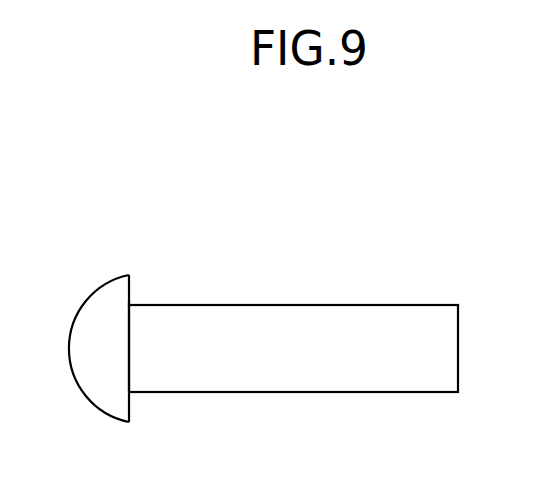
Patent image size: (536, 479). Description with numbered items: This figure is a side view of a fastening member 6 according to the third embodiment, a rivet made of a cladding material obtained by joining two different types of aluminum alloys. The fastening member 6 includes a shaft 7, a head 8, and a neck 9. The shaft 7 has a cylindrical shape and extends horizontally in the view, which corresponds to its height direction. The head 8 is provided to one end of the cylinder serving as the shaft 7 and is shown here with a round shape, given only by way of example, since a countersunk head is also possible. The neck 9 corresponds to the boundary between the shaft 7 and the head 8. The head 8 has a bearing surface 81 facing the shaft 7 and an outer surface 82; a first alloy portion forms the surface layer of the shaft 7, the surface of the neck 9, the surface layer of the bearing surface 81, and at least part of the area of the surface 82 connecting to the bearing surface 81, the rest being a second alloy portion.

The fastening member 6 is at (398, 201).
The shaft 7 is at (363, 377).
The head 8 is at (87, 350).
The bearing surface 81 is at (131, 410).
The surface of the head 82 is at (95, 290).
The neck 9 is at (130, 304).